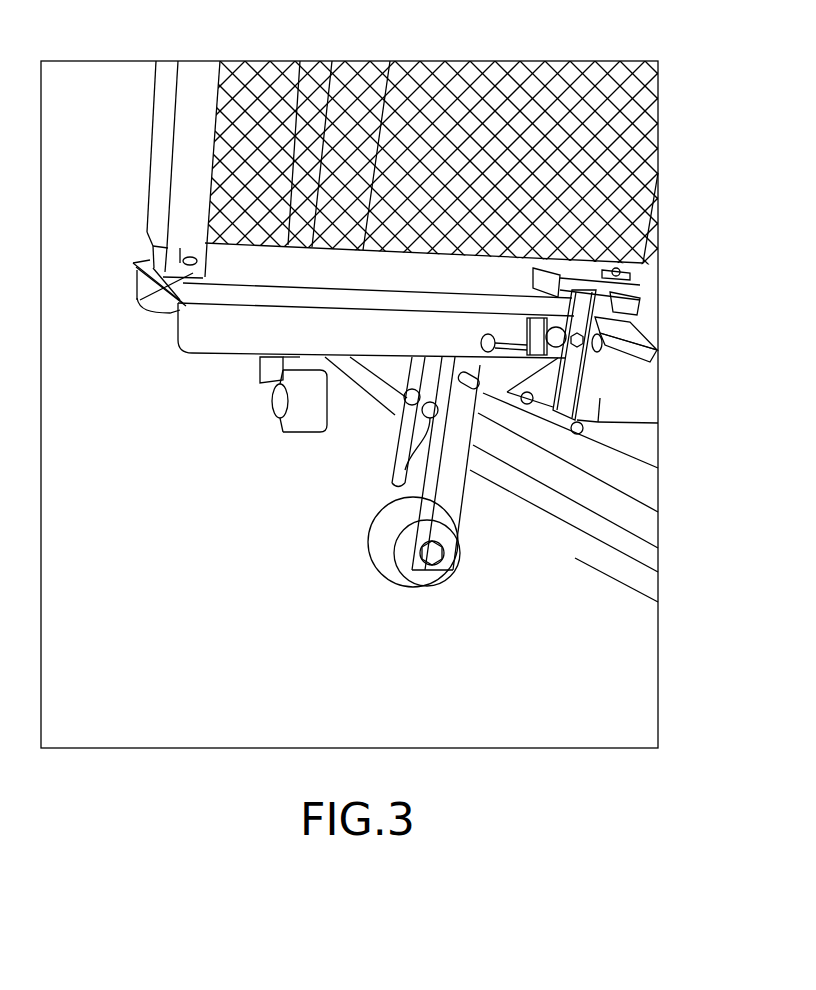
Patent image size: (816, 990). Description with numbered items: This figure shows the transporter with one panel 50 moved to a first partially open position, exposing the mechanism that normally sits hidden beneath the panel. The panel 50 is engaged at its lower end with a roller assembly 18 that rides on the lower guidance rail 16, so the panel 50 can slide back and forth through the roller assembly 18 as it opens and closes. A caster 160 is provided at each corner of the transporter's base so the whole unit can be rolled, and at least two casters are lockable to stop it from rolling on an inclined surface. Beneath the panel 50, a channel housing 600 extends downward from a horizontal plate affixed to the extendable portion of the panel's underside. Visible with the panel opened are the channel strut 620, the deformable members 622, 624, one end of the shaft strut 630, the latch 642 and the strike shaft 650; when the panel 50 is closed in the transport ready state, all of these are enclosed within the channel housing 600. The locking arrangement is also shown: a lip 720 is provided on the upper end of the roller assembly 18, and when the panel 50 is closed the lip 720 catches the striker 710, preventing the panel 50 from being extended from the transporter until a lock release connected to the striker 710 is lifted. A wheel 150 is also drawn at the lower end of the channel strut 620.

The lower guidance rail 16 is at (617, 540).
The roller assembly 18 is at (640, 458).
The panel 50 is at (190, 107).
The roller wheel 150 is at (390, 550).
The caster 160 is at (270, 425).
The channel housing 600 is at (216, 333).
The channel strut 620 is at (447, 497).
The deformable member 622 is at (404, 400).
The deformable member 624 is at (422, 418).
The shaft strut 630 is at (600, 388).
The latch 642 is at (505, 385).
The strike shaft 650 is at (488, 370).
The striker 710 is at (137, 300).
The lip 720 is at (635, 287).